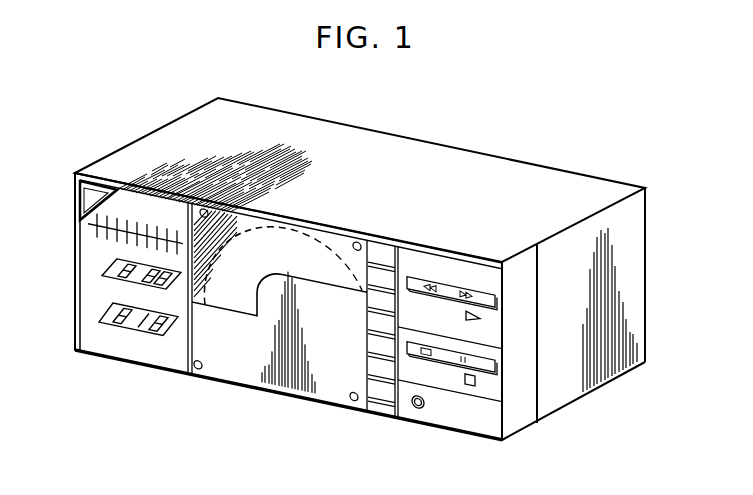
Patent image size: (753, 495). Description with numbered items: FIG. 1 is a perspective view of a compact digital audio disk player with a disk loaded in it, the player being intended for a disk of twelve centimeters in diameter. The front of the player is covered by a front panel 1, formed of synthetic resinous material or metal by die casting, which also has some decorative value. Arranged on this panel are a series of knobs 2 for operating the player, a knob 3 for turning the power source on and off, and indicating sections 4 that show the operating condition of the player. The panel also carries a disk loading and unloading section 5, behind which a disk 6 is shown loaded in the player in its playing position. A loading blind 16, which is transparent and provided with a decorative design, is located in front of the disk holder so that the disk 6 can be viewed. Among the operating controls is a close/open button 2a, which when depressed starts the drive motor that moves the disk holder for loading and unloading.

The front panel 1 is at (139, 202).
The knobs 2 is at (380, 404).
The close/open button 2a is at (463, 420).
The knob 3 is at (78, 175).
The indicating sections 4 is at (126, 322).
The disk loading and unloading section 5 is at (333, 234).
The disk 6 is at (273, 222).
The loading blind 16 is at (273, 378).